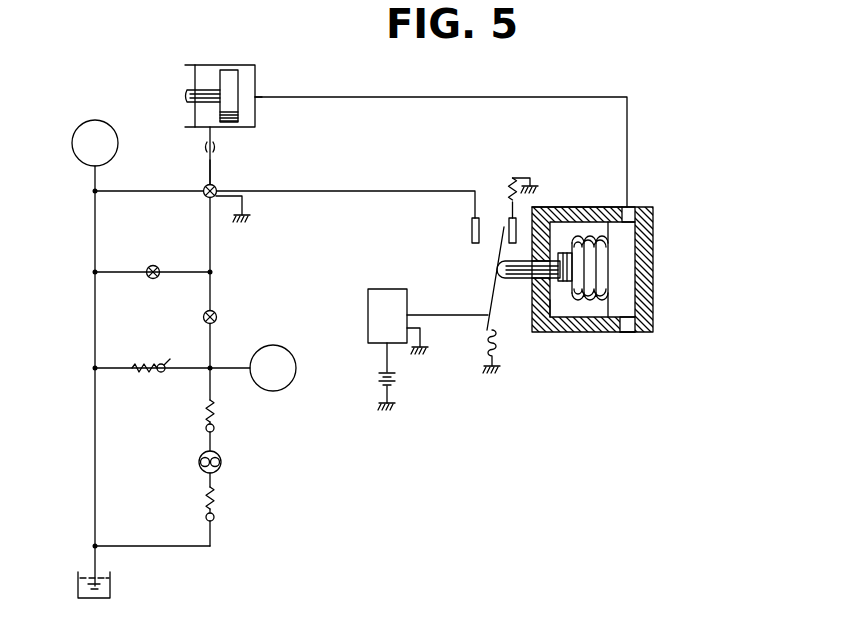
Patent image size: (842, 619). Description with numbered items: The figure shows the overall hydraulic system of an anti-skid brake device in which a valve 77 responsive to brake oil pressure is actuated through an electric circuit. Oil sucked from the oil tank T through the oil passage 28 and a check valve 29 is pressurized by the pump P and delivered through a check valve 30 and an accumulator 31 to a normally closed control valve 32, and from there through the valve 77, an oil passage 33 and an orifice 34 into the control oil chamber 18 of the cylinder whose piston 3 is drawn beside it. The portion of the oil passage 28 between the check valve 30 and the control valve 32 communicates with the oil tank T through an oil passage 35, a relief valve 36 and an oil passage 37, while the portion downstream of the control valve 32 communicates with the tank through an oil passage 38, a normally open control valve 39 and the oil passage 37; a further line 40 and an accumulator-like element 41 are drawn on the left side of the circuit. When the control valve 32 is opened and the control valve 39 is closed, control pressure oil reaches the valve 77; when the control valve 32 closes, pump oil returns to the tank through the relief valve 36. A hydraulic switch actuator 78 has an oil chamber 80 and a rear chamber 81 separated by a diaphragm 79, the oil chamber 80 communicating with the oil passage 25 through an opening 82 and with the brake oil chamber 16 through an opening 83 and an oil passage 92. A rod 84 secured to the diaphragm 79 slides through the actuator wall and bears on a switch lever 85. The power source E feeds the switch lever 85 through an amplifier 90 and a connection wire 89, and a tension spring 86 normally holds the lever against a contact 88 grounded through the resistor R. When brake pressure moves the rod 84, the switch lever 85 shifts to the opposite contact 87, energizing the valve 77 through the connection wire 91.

The piston 3 is at (234, 64).
The brake oil chamber 16 is at (250, 77).
The control oil chamber 18 is at (209, 82).
The oil passage 25 is at (627, 340).
The oil passage 28 is at (160, 548).
The check valve 29 is at (215, 521).
The check valve 30 is at (215, 431).
The accumulator 31 is at (296, 368).
The normally closed control valve 32 is at (218, 317).
The oil passage 33 is at (207, 172).
The orifice 34 is at (201, 147).
The oil passage 35 is at (188, 366).
The relief valve 36 is at (164, 373).
The oil passage 37 is at (93, 418).
The oil passage 38 is at (192, 271).
The normally open control valve 39 is at (160, 278).
The line 40 is at (120, 195).
The accumulator 41 is at (72, 143).
The valve responsive to brake oil pressure 77 is at (216, 188).
The hydraulic switch actuator 78 is at (593, 204).
The diaphragm 79 is at (609, 250).
The oil chamber 80 is at (625, 285).
The rear chamber 81 is at (554, 303).
The opening 82 is at (636, 326).
The opening 83 is at (629, 222).
The rod 84 is at (521, 280).
The switch lever 85 is at (492, 286).
The tension spring 86 is at (497, 345).
The contact 87 is at (471, 230).
The contact 88 is at (508, 230).
The connection wire 89 is at (427, 314).
The amplifier 90 is at (388, 289).
The connection wire 91 is at (318, 192).
The oil passage 92 is at (377, 97).
The pump P is at (222, 462).
The oil tank T is at (77, 585).
The resistor R is at (506, 182).
The power source E is at (374, 386).